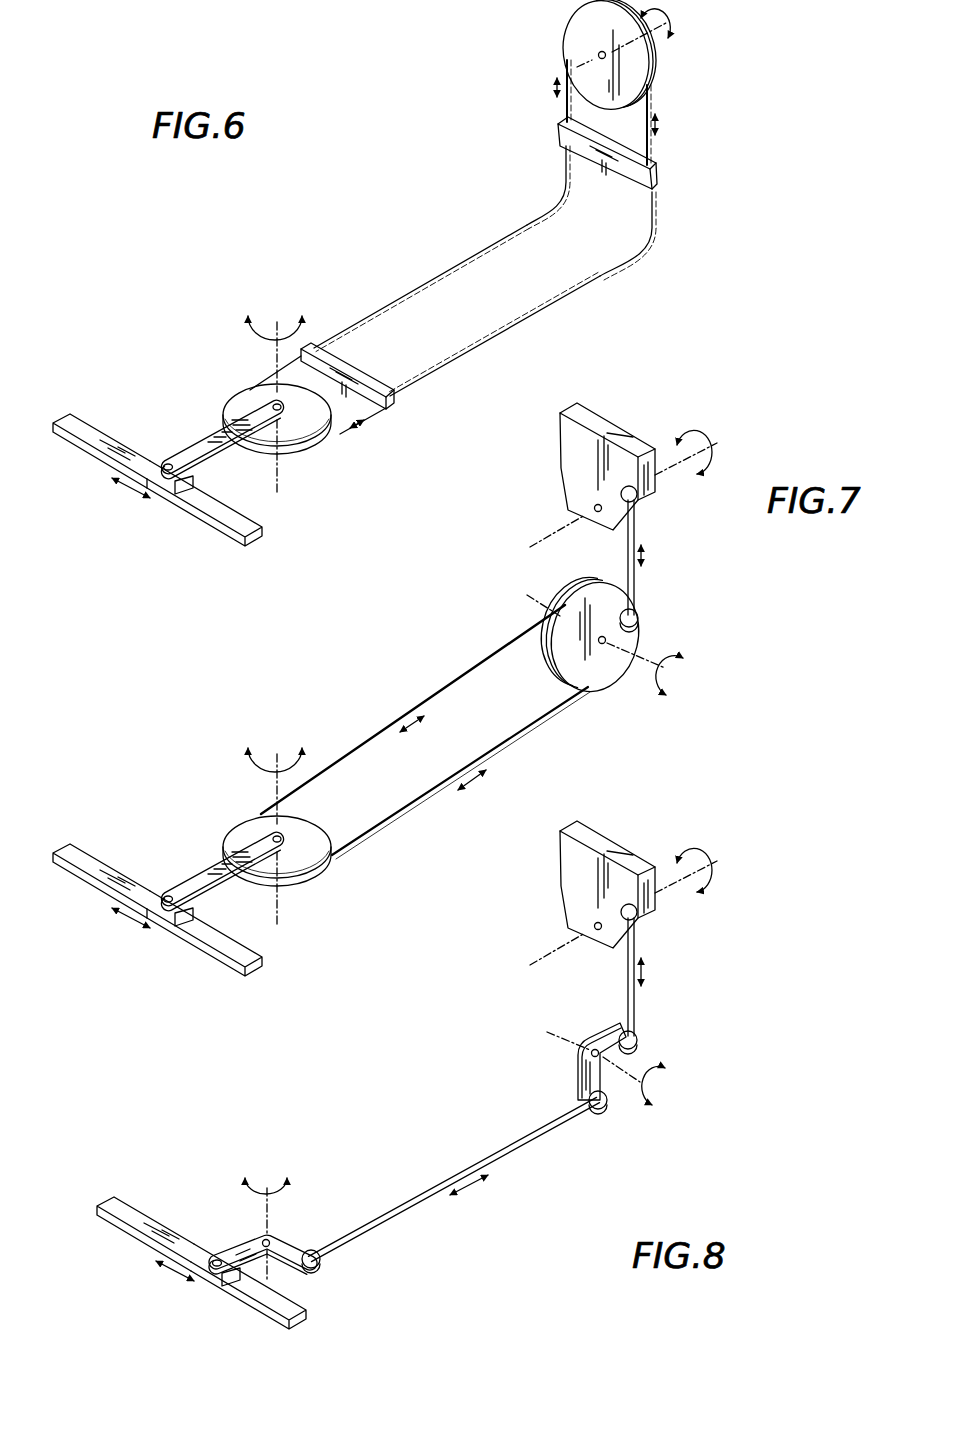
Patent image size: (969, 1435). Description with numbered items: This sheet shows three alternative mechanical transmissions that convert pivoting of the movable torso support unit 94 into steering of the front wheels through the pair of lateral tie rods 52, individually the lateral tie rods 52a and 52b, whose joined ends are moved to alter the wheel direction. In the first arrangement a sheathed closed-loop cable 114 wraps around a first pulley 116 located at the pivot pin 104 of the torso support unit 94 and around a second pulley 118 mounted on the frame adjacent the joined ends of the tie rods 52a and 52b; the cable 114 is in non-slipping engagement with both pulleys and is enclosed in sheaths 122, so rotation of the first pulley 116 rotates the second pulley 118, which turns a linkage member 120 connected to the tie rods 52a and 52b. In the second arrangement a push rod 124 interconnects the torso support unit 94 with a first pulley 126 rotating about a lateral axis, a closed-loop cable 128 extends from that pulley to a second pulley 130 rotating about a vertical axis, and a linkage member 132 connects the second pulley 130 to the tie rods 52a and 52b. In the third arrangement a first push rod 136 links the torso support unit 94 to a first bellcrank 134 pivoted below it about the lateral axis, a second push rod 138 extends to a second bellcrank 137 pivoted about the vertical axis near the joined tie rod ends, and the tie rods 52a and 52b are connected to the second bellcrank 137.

In FIG. 6, the lateral tie rods 52 is at (137, 476).
In FIG. 7, the lateral tie rods 52 is at (137, 908).
In FIG. 8, the lateral tie rods 52 is at (213, 1245).
In FIG. 6, the lateral tie rod 52a is at (90, 447).
In FIG. 7, the lateral tie rod 52a is at (81, 886).
In FIG. 8, the lateral tie rod 52a is at (121, 1239).
In FIG. 6, the lateral tie rod 52b is at (211, 530).
In FIG. 7, the lateral tie rod 52b is at (204, 954).
In FIG. 8, the lateral tie rod 52b is at (285, 1286).
In FIG. 7, the movable torso support unit 94 is at (575, 433).
In FIG. 8, the movable torso support unit 94 is at (608, 893).
In FIG. 6, the pivot pin 104 is at (600, 56).
In FIG. 7, the pivot pin 104 is at (596, 507).
In FIG. 8, the pivot pin 104 is at (551, 917).
In FIG. 6, the sheathed closed-loop cable 114 is at (650, 98).
In FIG. 6, the first pulley 116 is at (575, 27).
In FIG. 6, the second pulley 118 is at (246, 392).
In FIG. 6, the linkage member 120 is at (218, 445).
In FIG. 6, the sheaths 122 is at (600, 277).
In FIG. 7, the push rod 124 is at (636, 582).
In FIG. 7, the first pulley 126 is at (636, 634).
In FIG. 7, the closed-loop cable 128 is at (465, 677).
In FIG. 7, the second pulley 130 is at (259, 836).
In FIG. 7, the linkage member 132 is at (222, 885).
In FIG. 8, the first bellcrank 134 is at (598, 1034).
In FIG. 8, the first push rod 136 is at (672, 977).
In FIG. 8, the second bellcrank 137 is at (289, 1242).
In FIG. 8, the second push rod 138 is at (505, 1140).